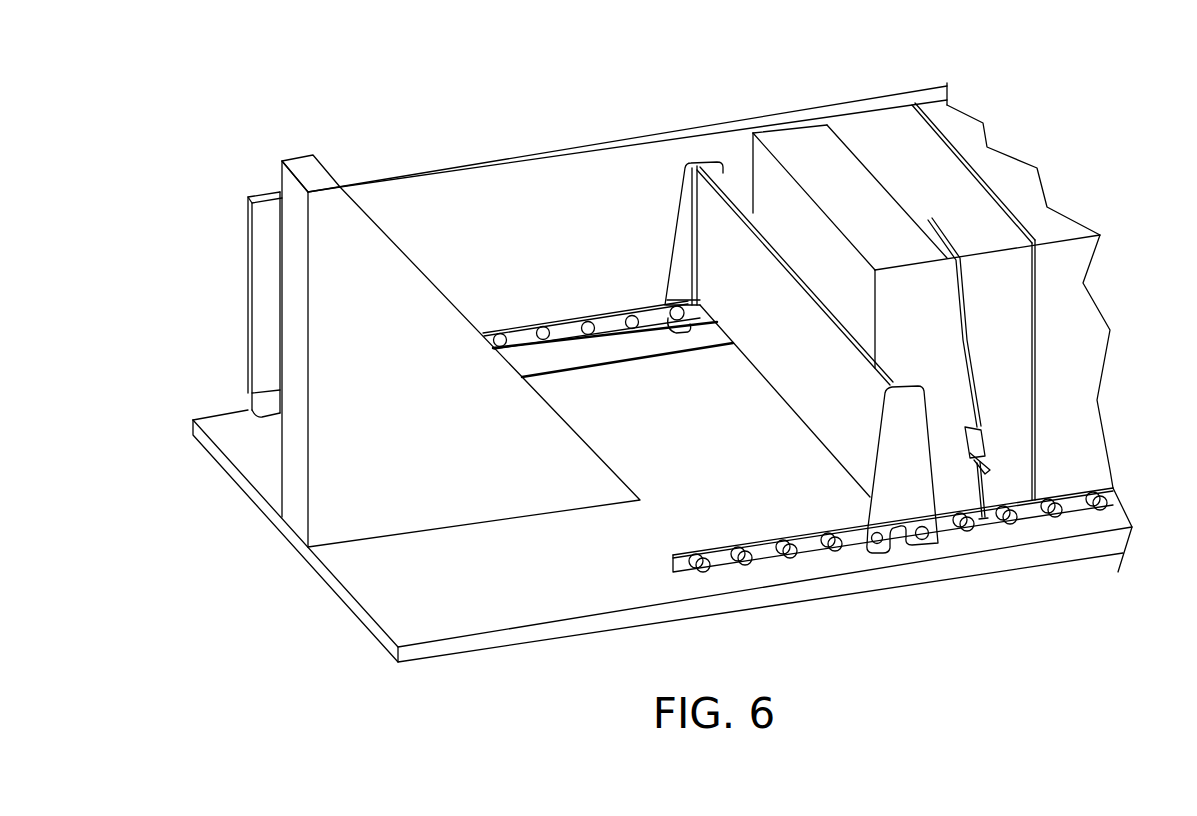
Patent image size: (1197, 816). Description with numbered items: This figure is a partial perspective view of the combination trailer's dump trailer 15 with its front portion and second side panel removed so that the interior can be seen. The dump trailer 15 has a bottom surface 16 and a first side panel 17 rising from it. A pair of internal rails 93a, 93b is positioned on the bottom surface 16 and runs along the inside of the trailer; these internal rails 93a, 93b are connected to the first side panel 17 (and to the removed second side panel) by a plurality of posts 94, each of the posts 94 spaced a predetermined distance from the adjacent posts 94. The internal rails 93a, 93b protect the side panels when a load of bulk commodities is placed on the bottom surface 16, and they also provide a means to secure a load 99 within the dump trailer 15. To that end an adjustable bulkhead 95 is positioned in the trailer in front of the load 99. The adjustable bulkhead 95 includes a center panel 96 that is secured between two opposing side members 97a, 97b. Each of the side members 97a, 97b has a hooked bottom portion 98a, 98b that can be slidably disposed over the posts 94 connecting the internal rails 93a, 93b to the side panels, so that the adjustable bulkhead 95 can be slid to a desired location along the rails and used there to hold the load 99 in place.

The dump trailer 15 is at (390, 123).
The bottom surface 16 is at (392, 585).
The first side panel 17 is at (487, 207).
The internal rail 93a is at (607, 322).
The internal rail 93b is at (762, 553).
The posts 94 is at (548, 345).
The adjustable bulkhead 95 is at (917, 470).
The center panel 96 is at (728, 252).
The side member 97a is at (685, 222).
The side member 97b is at (897, 505).
The hooked bottom portion 98a is at (673, 327).
The hooked bottom portion 98b is at (875, 552).
The load 99 is at (813, 145).